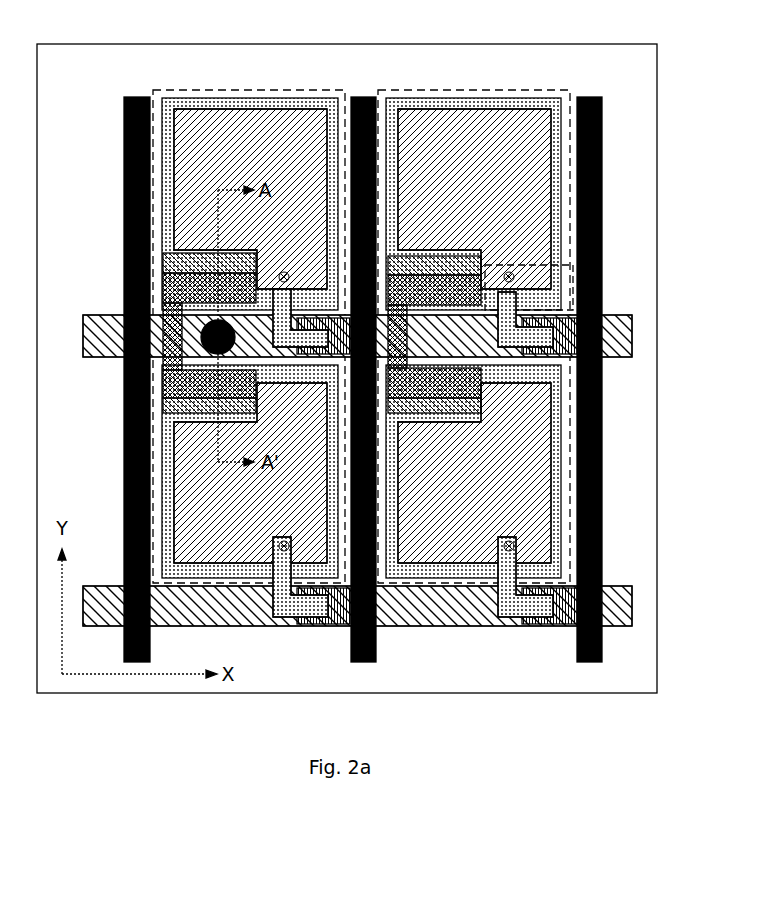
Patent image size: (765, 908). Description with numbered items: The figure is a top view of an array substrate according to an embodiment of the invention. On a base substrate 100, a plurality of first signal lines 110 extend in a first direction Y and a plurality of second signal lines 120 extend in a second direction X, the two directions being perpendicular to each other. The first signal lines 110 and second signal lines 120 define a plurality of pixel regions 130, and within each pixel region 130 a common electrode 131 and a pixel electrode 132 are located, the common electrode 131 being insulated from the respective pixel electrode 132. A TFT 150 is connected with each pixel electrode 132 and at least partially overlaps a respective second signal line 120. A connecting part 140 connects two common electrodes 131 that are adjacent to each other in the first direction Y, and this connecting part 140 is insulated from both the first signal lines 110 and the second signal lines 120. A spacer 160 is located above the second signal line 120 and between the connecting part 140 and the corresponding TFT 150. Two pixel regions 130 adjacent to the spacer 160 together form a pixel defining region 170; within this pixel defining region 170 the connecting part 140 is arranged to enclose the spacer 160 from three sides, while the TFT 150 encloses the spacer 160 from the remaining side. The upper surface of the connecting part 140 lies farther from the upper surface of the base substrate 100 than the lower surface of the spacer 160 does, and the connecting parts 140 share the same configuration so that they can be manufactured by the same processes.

The base substrate 100 is at (90, 58).
The first signal line 110 is at (589, 118).
The second signal line 120 is at (94, 316).
The pixel region 130 is at (486, 88).
The common electrode 131 is at (220, 106).
The pixel electrode 132 is at (286, 115).
The connecting part 140 is at (162, 379).
The TFT 150 is at (571, 303).
The spacer 160 is at (229, 348).
The pixel defining region 170 is at (188, 88).